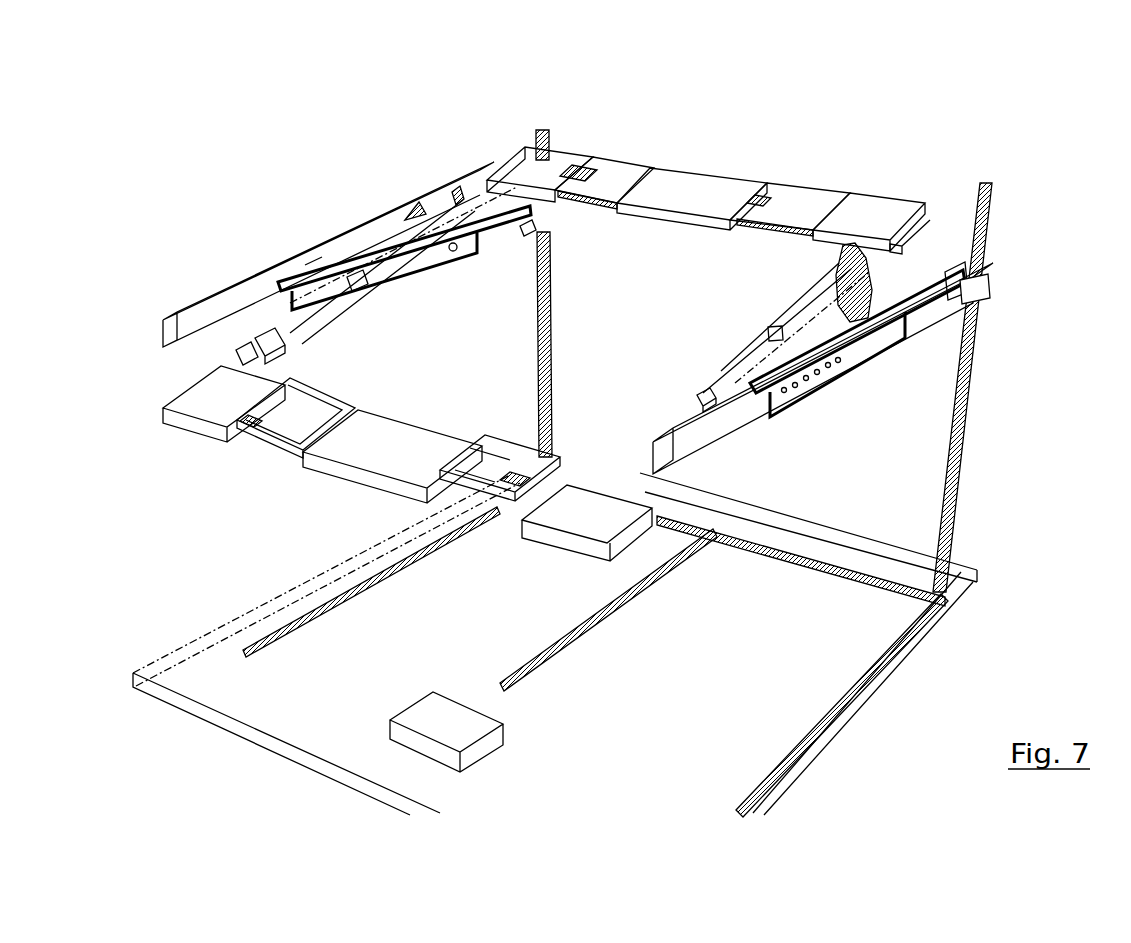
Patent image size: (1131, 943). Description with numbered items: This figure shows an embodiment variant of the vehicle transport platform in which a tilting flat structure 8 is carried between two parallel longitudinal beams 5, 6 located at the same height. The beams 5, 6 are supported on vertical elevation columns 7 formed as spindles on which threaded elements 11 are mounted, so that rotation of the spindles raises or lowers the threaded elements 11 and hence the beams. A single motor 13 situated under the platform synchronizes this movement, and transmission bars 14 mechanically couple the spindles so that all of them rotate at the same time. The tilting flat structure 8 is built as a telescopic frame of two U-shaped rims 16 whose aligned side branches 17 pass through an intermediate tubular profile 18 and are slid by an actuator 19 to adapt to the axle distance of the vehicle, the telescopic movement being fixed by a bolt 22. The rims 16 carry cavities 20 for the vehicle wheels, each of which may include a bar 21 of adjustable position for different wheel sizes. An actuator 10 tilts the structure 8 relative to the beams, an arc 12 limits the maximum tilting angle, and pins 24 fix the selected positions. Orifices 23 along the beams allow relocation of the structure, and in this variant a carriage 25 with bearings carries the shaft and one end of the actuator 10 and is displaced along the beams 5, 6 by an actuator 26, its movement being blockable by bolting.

The longitudinal beam 5 is at (735, 430).
The longitudinal beam 6 is at (245, 320).
The vertical elevation column 7 is at (552, 406).
The tilting flat structure 8 is at (883, 157).
The actuator 10 is at (453, 250).
The threaded element 11 is at (988, 283).
The arc 12 is at (415, 205).
The motor 13 is at (480, 730).
The transmission bar 14 is at (353, 597).
The U-shaped rim 16 is at (185, 400).
The side branch 17 is at (240, 355).
The intermediate tubular profile 18 is at (355, 280).
The actuator 19 is at (390, 250).
The cavity 20 is at (308, 417).
The bar 21 is at (277, 432).
The bolt 22 is at (273, 333).
The orifice 23 is at (784, 393).
The pin 24 is at (312, 268).
The carriage 25 is at (330, 285).
The actuator 26 is at (527, 230).